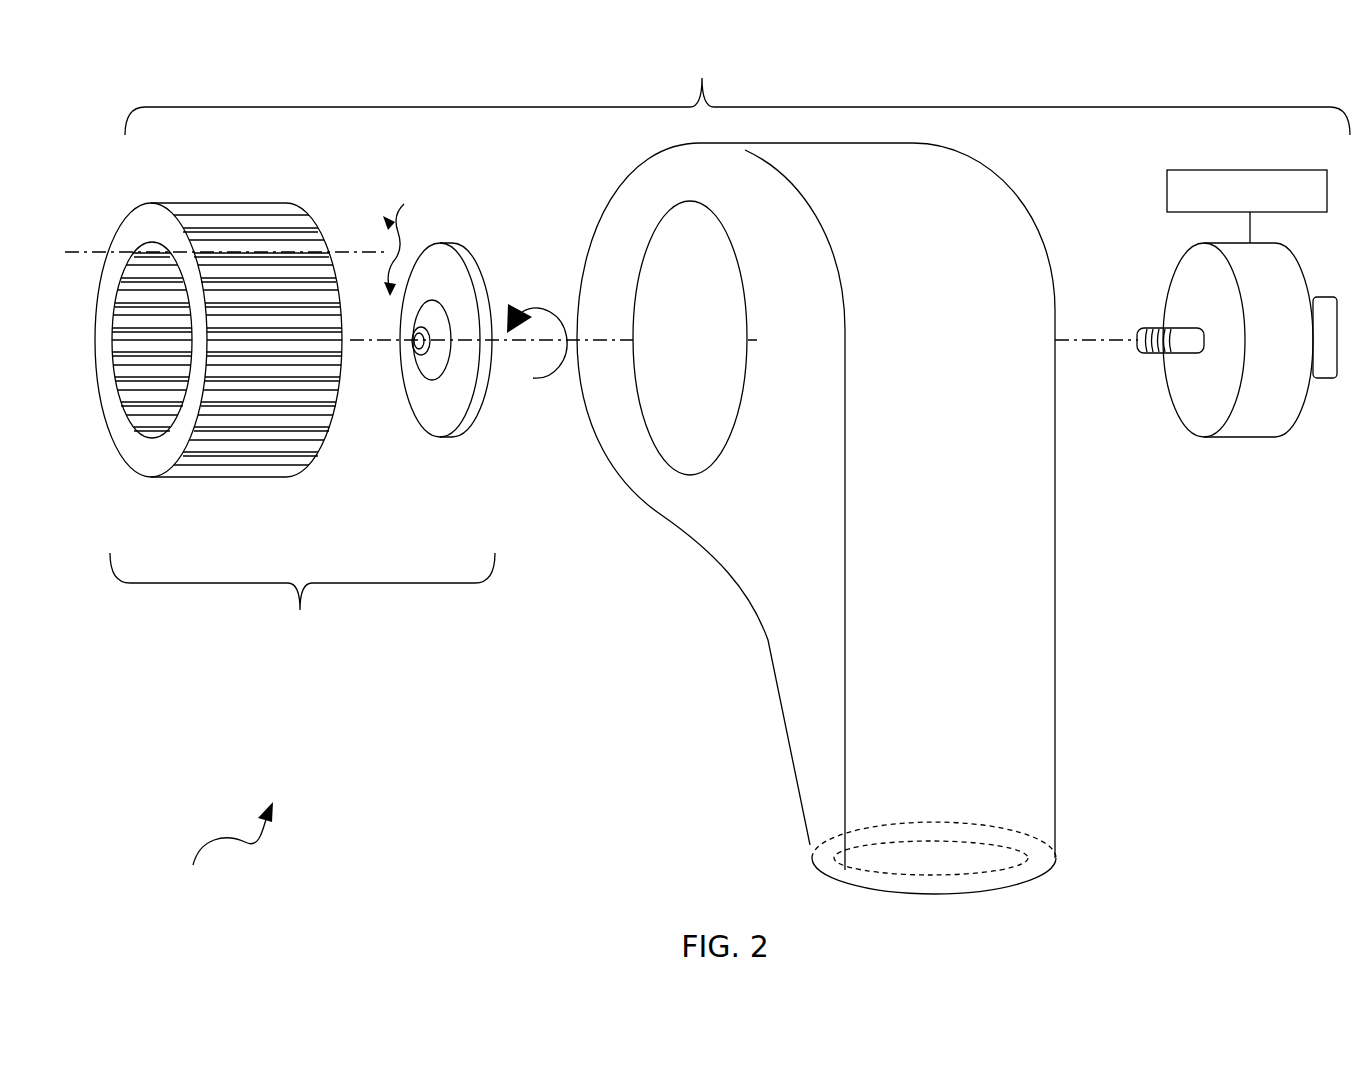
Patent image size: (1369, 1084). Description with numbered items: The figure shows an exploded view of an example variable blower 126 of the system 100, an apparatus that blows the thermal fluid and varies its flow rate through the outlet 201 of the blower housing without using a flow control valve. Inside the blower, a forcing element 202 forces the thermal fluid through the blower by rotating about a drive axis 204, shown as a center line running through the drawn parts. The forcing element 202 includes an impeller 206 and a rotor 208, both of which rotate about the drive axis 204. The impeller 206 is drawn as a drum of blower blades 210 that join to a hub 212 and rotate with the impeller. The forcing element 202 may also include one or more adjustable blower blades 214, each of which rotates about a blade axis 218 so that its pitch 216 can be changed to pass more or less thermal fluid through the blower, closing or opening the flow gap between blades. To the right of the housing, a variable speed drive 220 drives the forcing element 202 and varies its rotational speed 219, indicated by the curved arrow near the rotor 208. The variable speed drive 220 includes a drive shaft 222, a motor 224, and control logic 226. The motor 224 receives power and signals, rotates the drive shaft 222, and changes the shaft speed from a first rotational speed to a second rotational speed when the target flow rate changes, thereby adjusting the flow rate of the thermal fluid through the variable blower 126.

The blower system 100 is at (204, 846).
The variable blower 126 is at (737, 88).
The outlet 201 is at (995, 872).
The forcing element 202 is at (302, 607).
The drive axis 204 is at (365, 343).
The impeller 206 is at (215, 379).
The rotor 208 is at (462, 436).
The blower blades 210 is at (105, 477).
The hub 212 is at (118, 440).
The adjustable blower blade 214 is at (317, 233).
The pitch 216 is at (405, 235).
The blade axis 218 is at (77, 252).
The rotational speed 219 is at (550, 306).
The variable speed drive 220 is at (1216, 365).
The drive shaft 222 is at (1146, 327).
The motor 224 is at (1170, 382).
The control logic 226 is at (1167, 196).